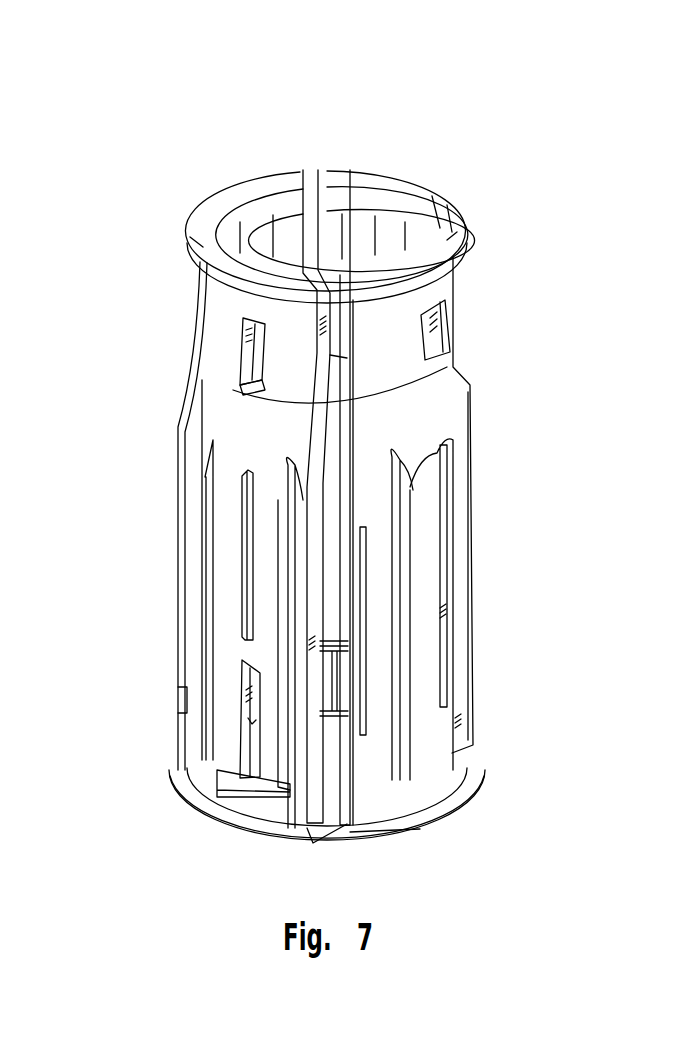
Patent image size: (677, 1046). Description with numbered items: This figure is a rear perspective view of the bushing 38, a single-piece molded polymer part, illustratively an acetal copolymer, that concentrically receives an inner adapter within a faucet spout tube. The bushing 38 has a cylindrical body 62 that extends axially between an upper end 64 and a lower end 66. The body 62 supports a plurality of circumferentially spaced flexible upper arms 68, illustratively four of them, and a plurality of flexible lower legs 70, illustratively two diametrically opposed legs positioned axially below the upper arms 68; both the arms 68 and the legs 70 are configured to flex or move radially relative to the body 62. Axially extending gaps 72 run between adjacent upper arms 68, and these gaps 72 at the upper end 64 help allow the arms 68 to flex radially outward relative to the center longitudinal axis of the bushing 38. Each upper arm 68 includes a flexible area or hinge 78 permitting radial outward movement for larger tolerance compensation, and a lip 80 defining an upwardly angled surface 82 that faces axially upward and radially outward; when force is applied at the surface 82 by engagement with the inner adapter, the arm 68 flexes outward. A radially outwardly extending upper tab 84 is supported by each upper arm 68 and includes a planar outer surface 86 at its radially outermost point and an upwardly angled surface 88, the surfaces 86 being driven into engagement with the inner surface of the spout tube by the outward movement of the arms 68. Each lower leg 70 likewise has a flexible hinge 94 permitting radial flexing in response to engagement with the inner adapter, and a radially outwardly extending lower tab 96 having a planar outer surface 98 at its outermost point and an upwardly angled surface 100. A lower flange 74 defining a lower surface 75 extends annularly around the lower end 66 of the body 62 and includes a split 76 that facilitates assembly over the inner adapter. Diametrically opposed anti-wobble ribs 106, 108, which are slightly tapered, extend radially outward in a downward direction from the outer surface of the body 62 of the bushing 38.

The bushing 38 is at (575, 148).
The cylindrical body 62 is at (450, 392).
The upper end 64 is at (176, 194).
The lower end 66 is at (491, 798).
The upper arms 68 is at (340, 167).
The lower legs 70 is at (232, 757).
The gaps 72 is at (343, 280).
The lower flange 74 is at (228, 815).
The lower surface 75 is at (420, 830).
The split 76 is at (302, 842).
The hinge 78 is at (253, 390).
The lip 80 is at (458, 230).
The upwardly angled surface 82 is at (229, 197).
The upper tab 84 is at (237, 343).
The planar outer surface 86 is at (233, 372).
The upwardly angled surface 88 is at (233, 357).
The hinge 94 is at (228, 642).
The lower tab 96 is at (240, 700).
The planar outer surface 98 is at (260, 790).
The upwardly angled surface 100 is at (247, 718).
The anti-wobble rib 106 is at (242, 500).
The anti-wobble rib 108 is at (452, 627).